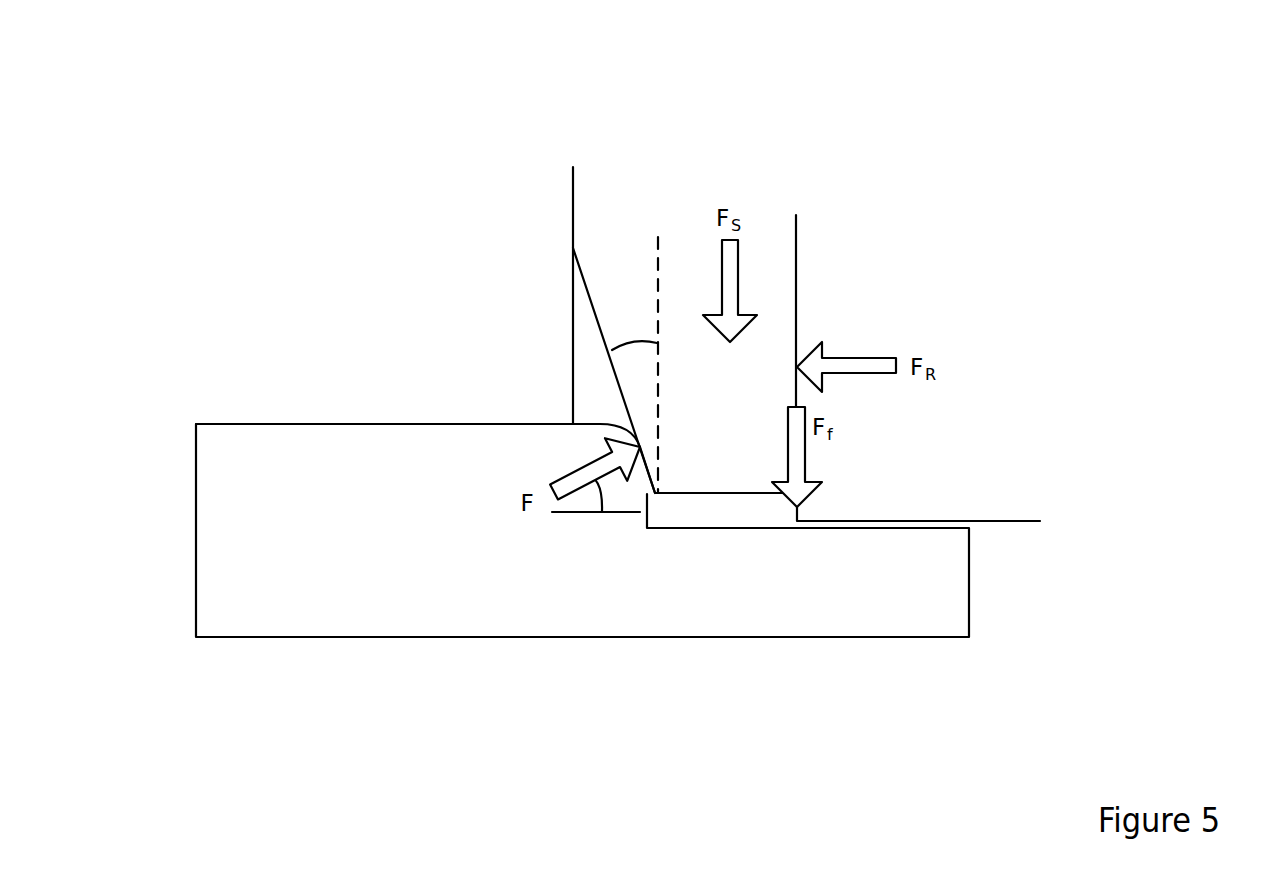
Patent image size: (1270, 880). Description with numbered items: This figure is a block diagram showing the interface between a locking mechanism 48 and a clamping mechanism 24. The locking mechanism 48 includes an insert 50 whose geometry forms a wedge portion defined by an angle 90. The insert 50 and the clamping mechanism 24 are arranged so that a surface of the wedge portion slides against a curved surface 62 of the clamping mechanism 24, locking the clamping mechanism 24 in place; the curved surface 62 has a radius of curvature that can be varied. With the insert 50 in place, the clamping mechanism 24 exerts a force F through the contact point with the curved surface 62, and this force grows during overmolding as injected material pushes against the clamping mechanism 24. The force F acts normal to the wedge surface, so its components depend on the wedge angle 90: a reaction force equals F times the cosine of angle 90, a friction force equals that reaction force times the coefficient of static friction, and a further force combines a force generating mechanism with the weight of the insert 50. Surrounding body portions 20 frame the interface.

The tool body 20 is at (330, 348).
The clamping mechanism 24 is at (259, 571).
The locking mechanism 48 is at (786, 111).
The insert 50 is at (715, 469).
The curved surface 62 is at (648, 497).
The angle 90 is at (633, 342).